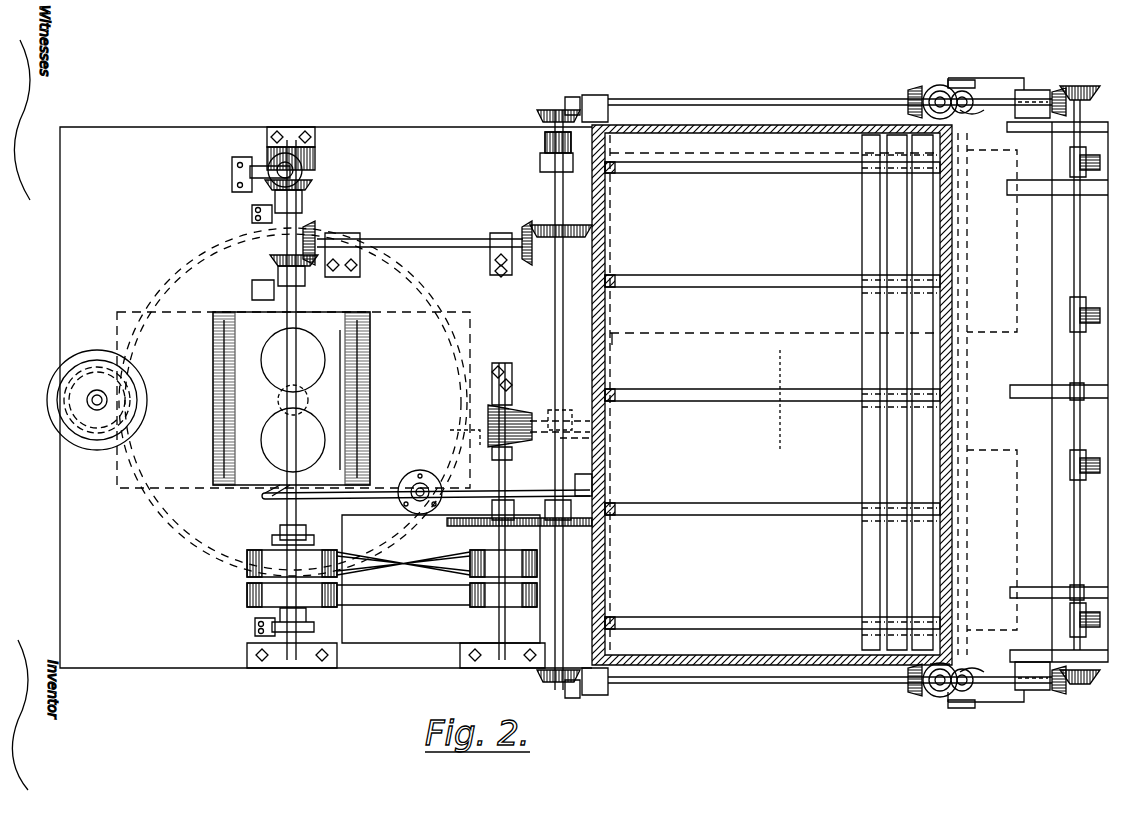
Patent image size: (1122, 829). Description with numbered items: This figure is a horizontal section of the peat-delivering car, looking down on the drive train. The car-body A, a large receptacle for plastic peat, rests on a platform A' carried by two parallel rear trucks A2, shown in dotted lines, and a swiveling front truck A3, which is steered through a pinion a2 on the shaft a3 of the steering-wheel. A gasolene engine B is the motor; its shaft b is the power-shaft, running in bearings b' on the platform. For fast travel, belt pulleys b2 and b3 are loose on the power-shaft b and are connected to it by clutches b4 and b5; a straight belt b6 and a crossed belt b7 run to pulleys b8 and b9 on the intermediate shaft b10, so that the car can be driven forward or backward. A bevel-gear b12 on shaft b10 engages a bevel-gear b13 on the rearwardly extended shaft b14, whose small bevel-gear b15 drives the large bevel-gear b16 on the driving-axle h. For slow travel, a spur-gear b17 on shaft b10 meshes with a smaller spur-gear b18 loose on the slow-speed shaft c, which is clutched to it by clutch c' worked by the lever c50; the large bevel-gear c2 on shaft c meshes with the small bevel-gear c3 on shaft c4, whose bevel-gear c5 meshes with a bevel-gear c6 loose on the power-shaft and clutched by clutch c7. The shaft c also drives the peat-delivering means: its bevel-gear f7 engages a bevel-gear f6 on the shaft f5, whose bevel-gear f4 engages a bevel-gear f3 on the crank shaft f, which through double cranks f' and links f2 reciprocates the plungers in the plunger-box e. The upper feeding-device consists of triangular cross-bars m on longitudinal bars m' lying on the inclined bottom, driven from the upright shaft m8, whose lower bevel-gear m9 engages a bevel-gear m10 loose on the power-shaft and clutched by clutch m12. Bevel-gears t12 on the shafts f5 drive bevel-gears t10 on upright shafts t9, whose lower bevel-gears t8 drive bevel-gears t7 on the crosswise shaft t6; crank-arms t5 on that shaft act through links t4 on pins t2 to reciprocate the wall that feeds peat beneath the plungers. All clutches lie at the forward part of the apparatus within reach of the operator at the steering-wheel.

The car-body A is at (772, 368).
The platform A' is at (326, 380).
The rear trucks A2 is at (770, 335).
The front truck A3 is at (150, 310).
The gasolene engine B is at (360, 378).
The pinion a2 is at (90, 435).
The steering-wheel shaft a3 is at (92, 402).
The power-shaft b is at (415, 500).
The bearings b' is at (388, 414).
The belt pulley b2 is at (280, 612).
The belt pulley b3 is at (247, 572).
The clutch b4 is at (262, 634).
The clutch b5 is at (306, 528).
The belt b6 is at (406, 596).
The crossed belt b7 is at (421, 560).
The pulley b8 is at (484, 607).
The pulley b9 is at (472, 556).
The intermediate shaft b10 is at (498, 478).
The bevel-gear b12 is at (470, 436).
The bevel-gear b13 is at (522, 410).
The rearwardly extended shaft b14 is at (568, 412).
The small bevel-gear b15 is at (590, 418).
The large bevel-gear b16 is at (620, 432).
The spur-gear b17 is at (438, 506).
The spur-gear b18 is at (600, 524).
The slow-speed shaft c is at (544, 400).
The clutch c' is at (588, 496).
The large bevel-gear c2 is at (592, 232).
The small bevel-gear c3 is at (526, 224).
The shaft c4 is at (450, 239).
The bevel-gear c5 is at (312, 224).
The bevel-gear c6 is at (270, 260).
The clutch c7 is at (305, 280).
The lever c50 is at (276, 487).
The plunger-box e is at (1098, 516).
The shaft f is at (1083, 375).
The double cranks f' is at (1065, 392).
The links f2 is at (1076, 314).
The bevel-gear f3 is at (1078, 86).
The bevel-gear f4 is at (1058, 112).
The shaft f5 is at (866, 99).
The bevel-gear f6 is at (576, 97).
The bevel-gear f7 is at (545, 110).
The driving-axle h is at (612, 333).
The cross-bars m is at (876, 392).
The longitudinal bars m' is at (772, 395).
The upright shaft m8 is at (252, 188).
The bevel-gear m9 is at (300, 176).
The bevel-gear m10 is at (315, 186).
The clutch m12 is at (252, 212).
The pins t2 is at (1032, 92).
The links t4 is at (1004, 78).
The crank-arms t5 is at (962, 80).
The shaft t6 is at (978, 562).
The bevel-gears t7 is at (978, 113).
The bevel-gears t8 is at (966, 92).
The shafts t9 is at (932, 690).
The bevel-gears t10 is at (938, 86).
The bevel-gears t12 is at (912, 98).